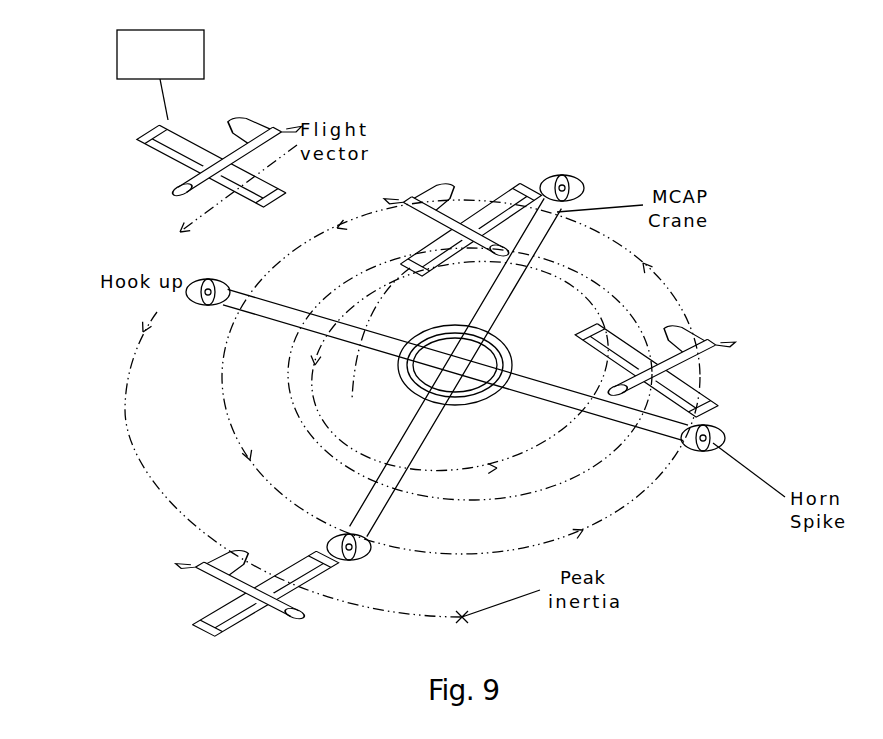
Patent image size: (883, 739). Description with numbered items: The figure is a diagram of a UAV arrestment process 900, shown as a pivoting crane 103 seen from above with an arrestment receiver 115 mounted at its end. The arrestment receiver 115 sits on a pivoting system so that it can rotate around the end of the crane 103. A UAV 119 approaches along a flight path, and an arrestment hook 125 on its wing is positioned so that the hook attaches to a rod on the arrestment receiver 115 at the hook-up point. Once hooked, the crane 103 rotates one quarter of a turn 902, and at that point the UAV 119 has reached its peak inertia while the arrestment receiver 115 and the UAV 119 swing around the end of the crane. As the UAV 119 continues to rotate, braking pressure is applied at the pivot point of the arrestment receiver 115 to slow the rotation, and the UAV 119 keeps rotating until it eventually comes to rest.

The UAV arrestment process 900 is at (672, 88).
The quarter turn 902 is at (127, 422).
The pivoting crane 103 is at (378, 336).
The arrestment receiver 115 is at (207, 306).
The UAV 119 is at (117, 53).
The arrestment hook 125 is at (250, 232).